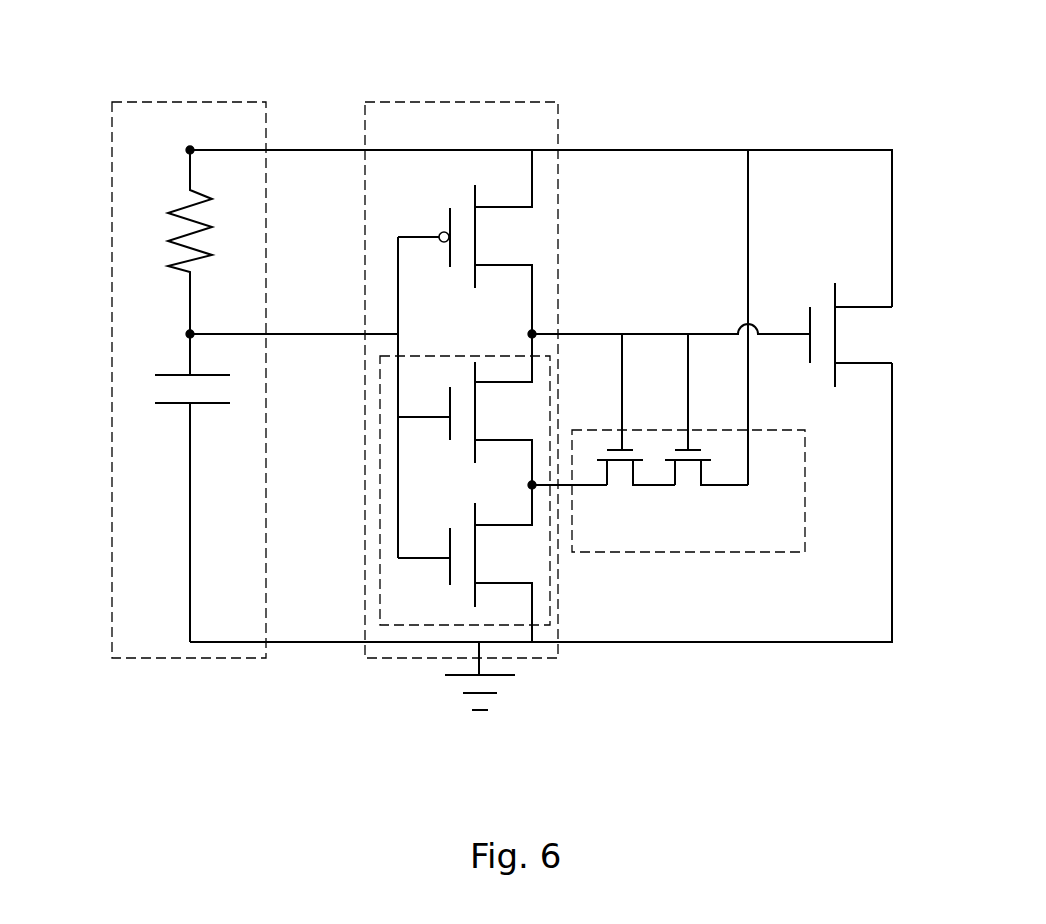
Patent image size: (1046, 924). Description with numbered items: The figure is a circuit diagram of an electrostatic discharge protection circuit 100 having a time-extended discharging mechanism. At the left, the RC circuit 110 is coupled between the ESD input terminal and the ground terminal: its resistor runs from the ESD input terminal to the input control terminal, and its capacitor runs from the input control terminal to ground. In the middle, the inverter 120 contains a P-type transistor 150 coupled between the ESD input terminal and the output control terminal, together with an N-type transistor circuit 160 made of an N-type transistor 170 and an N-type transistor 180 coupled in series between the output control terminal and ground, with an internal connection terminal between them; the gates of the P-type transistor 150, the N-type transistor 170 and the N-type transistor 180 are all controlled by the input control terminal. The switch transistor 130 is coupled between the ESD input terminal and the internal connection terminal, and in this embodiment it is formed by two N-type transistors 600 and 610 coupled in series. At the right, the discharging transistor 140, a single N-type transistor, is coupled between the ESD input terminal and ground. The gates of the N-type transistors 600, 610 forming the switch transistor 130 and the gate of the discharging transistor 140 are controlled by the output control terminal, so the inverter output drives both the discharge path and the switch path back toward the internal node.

The electrostatic discharge protection circuit 100 is at (905, 17).
The RC circuit 110 is at (112, 125).
The inverter 120 is at (365, 125).
The switch transistor 130 is at (790, 535).
The discharging transistor 140 is at (898, 324).
The P-type transistor 150 is at (540, 237).
The N-type transistor circuit 160 is at (380, 492).
The N-type transistor 170 is at (526, 406).
The N-type transistor 180 is at (526, 558).
The N-type transistor 600 is at (623, 490).
The N-type transistor 610 is at (690, 496).